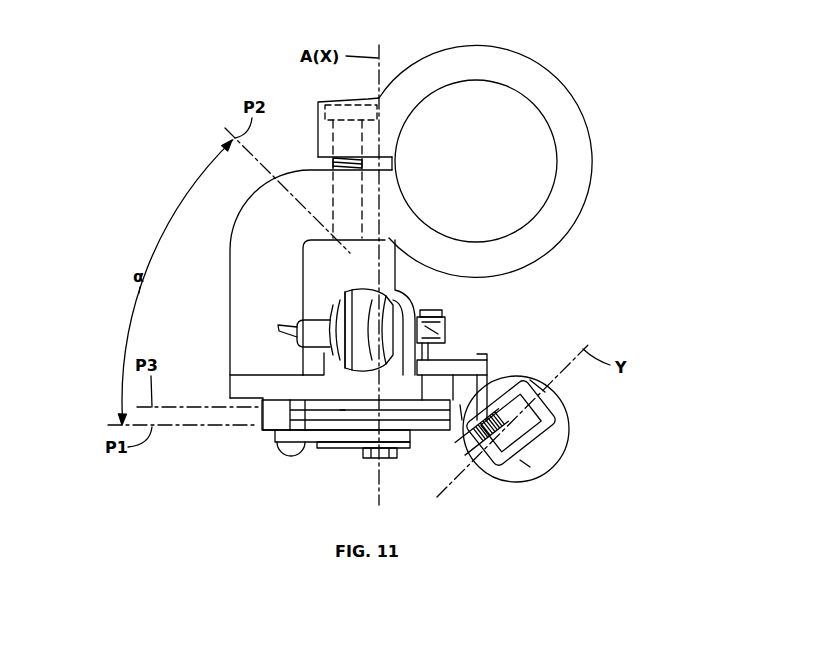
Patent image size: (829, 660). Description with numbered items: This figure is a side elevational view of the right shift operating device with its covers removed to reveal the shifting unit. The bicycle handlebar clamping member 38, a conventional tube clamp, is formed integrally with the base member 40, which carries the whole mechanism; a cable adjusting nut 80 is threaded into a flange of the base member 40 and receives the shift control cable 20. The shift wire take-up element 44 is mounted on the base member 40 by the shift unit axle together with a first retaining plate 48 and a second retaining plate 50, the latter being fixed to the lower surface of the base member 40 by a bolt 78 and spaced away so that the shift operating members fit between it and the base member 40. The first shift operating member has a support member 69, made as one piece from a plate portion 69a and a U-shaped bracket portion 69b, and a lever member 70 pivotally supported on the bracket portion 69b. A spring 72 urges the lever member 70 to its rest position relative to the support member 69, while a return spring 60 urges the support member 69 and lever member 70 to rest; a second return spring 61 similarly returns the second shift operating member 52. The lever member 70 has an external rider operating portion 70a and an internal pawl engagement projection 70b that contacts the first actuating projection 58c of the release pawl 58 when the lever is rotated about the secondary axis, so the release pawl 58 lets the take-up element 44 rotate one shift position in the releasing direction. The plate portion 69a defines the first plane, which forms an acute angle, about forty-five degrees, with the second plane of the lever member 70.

The shift control cable 20 is at (312, 306).
The bicycle handlebar clamping member 38 is at (568, 76).
The base member 40 is at (218, 388).
The shift wire take-up element 44 is at (458, 326).
The first retaining plate 48 is at (435, 310).
The second retaining plate 50 is at (409, 452).
The second shift operating member 52 is at (352, 393).
The release pawl 58 is at (412, 393).
The first actuating projection 58c is at (462, 362).
The return spring 60 is at (321, 460).
The return spring 61 is at (328, 402).
The support member 69 is at (272, 385).
The plate portion 69a is at (342, 420).
The bracket portion 69b is at (527, 465).
The lever member 70 is at (535, 447).
The external rider operating portion 70a is at (542, 393).
The internal pawl engagement projection 70b is at (461, 405).
The spring 72 is at (540, 450).
The bolt 78 is at (287, 454).
The cable adjusting nut 80 is at (378, 300).